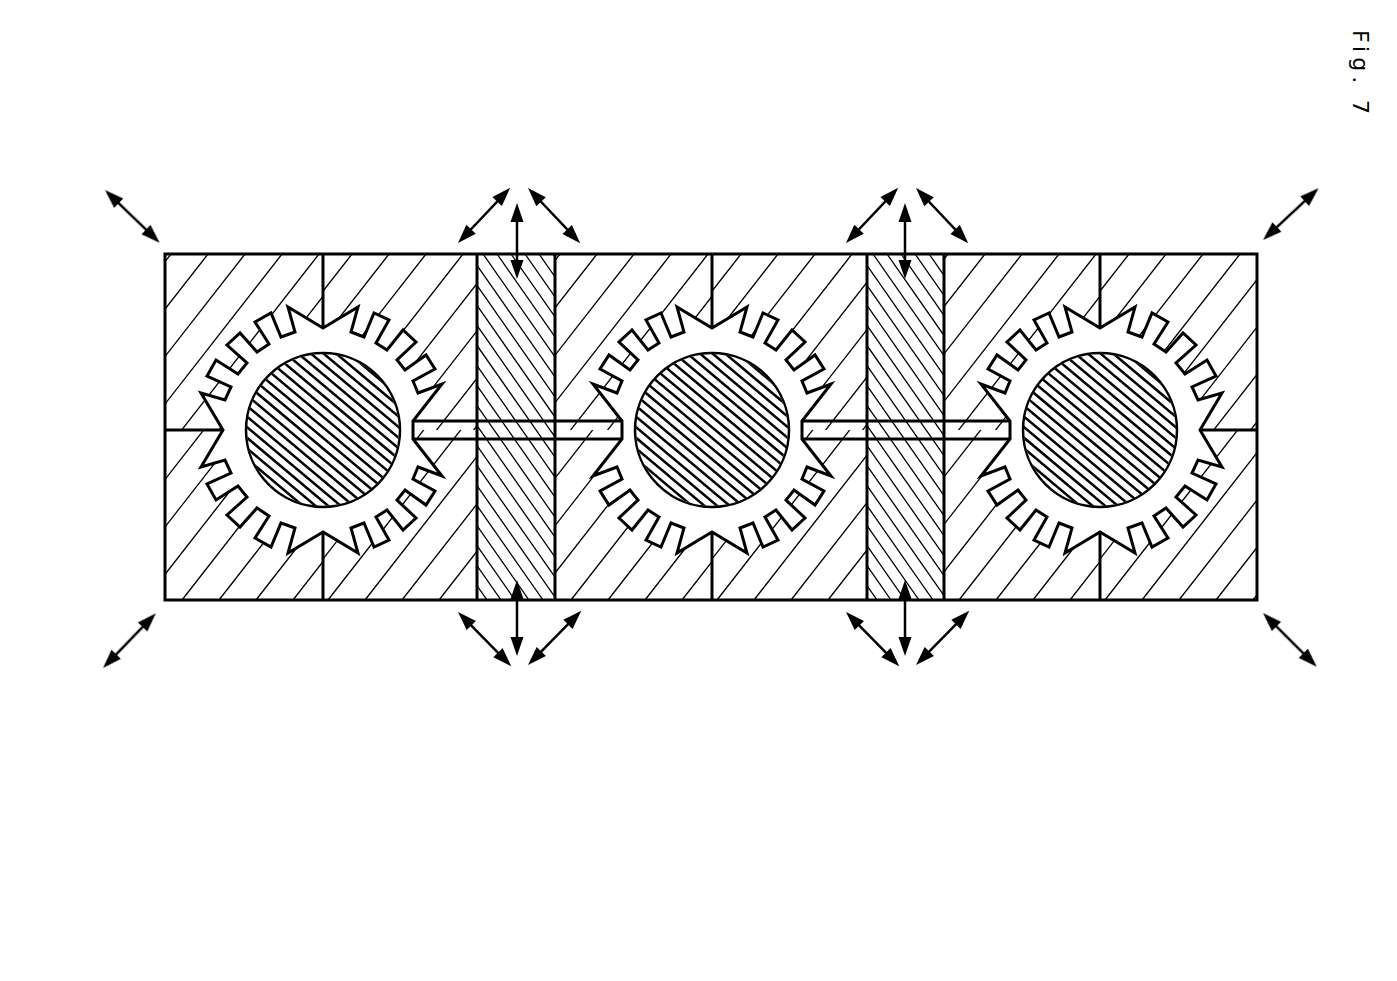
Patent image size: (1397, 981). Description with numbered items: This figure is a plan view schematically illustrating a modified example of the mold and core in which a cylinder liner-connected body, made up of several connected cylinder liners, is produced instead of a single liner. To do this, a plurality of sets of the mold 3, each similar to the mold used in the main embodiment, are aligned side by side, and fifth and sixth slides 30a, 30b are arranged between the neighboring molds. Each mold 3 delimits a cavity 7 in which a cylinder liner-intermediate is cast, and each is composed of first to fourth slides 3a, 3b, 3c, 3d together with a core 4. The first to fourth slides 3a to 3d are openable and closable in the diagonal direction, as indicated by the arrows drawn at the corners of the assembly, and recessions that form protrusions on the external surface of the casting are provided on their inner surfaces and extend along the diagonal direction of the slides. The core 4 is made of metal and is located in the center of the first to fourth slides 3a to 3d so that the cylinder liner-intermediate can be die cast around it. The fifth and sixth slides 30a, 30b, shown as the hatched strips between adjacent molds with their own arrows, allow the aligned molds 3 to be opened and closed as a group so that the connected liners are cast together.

The mold 3 is at (323, 246).
The first slide 3a is at (180, 360).
The second slide 3b is at (185, 530).
The third slide 3c is at (375, 285).
The fourth slide 3d is at (375, 565).
The fifth slide 30a is at (548, 282).
The sixth slide 30b is at (540, 535).
The core 4 is at (250, 437).
The cavity 7 is at (525, 426).